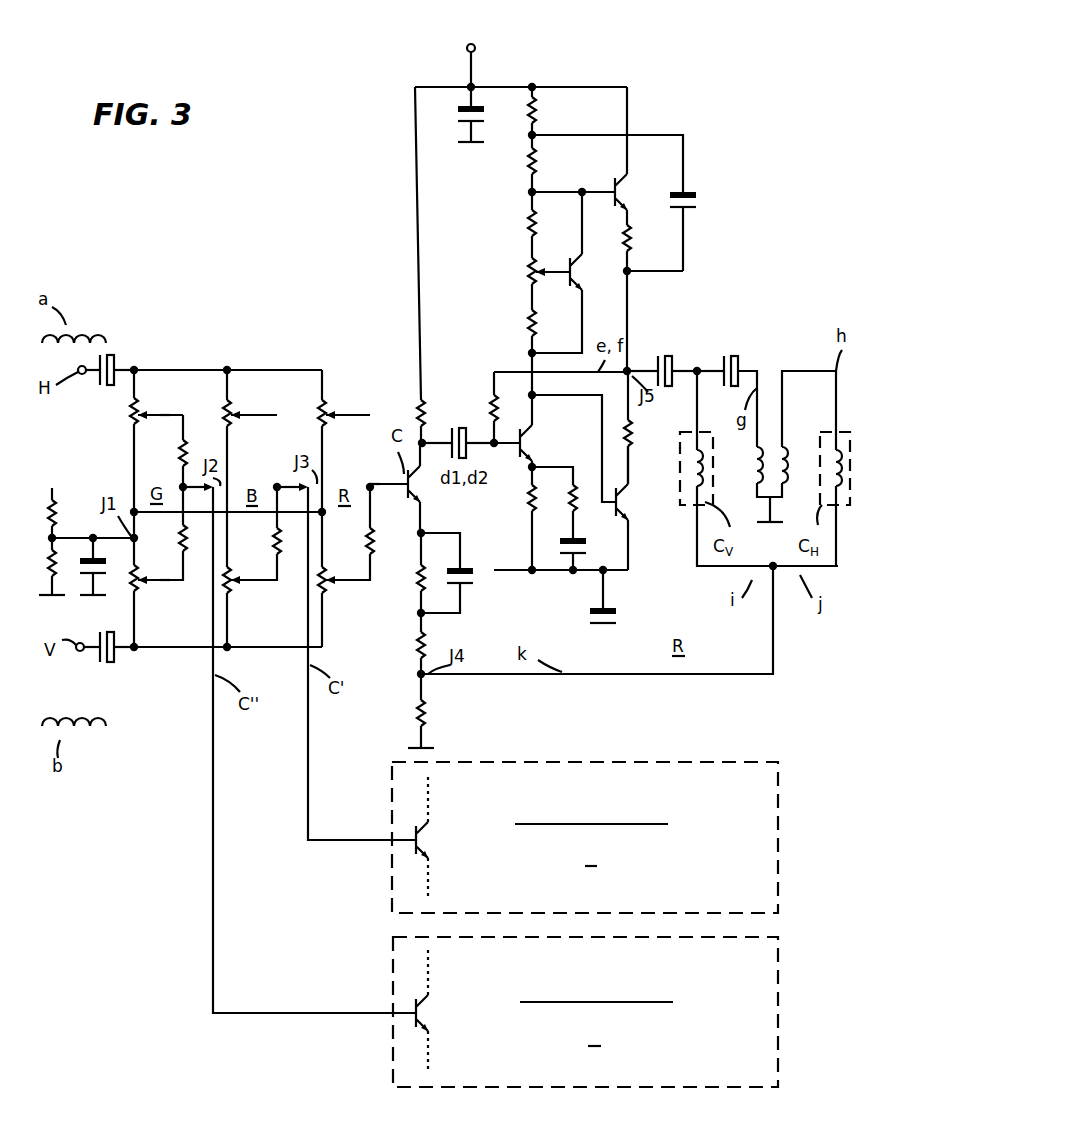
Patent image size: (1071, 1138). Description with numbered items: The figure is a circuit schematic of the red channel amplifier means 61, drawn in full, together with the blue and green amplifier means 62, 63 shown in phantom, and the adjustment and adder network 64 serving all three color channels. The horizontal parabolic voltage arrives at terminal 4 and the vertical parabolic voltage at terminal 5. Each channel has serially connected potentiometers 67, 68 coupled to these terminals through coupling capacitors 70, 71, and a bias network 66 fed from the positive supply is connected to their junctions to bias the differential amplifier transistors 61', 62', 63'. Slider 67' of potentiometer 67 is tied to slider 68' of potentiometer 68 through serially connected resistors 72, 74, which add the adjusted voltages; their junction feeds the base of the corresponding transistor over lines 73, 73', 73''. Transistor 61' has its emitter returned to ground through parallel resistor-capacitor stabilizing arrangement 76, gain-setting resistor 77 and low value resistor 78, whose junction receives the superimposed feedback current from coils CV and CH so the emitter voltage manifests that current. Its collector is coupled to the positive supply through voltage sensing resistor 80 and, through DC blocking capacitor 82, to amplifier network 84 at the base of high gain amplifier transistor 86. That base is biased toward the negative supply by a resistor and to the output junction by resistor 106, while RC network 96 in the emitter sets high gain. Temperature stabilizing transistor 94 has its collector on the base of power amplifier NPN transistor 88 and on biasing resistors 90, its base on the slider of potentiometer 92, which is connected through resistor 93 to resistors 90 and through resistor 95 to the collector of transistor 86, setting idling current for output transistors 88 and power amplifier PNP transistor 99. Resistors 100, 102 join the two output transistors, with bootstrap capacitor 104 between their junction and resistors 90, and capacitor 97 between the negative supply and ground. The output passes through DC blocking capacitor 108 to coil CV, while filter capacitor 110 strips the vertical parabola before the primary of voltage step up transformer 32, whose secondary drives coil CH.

The terminal 4 is at (84, 375).
The terminal 5 is at (82, 668).
The voltage step up transformer 32 is at (770, 448).
The amplifier means circuit 61 is at (521, 205).
The differential amplifier transistor 61' is at (419, 490).
The amplifier means circuit 62 is at (585, 818).
The differential amplifier transistor 62' is at (390, 836).
The amplifier means circuit 63 is at (609, 1012).
The differential amplifier transistor 63' is at (385, 1011).
The network 64 is at (228, 366).
The bias network 66 is at (80, 528).
The potentiometer 67 is at (228, 441).
The slider 67' is at (156, 443).
The potentiometer 68 is at (233, 565).
The slider 68' is at (169, 607).
The coupling capacitor 70 is at (114, 362).
The coupling capacitor 71 is at (116, 660).
The resistor 72 is at (188, 456).
The line 73 is at (387, 506).
The line 73' is at (362, 663).
The line 73'' is at (314, 750).
The resistor 74 is at (178, 538).
The parallel resistor-capacitor stabilizing arrangement 76 is at (462, 596).
The resistor 77 is at (418, 644).
The resistor 78 is at (432, 716).
The voltage sensing resistor 80 is at (418, 410).
The DC blocking capacitor 82 is at (454, 428).
The amplifier network 84 is at (496, 322).
The high gain amplifier transistor 86 is at (535, 437).
The power amplifier NPN transistor 88 is at (615, 185).
The biasing resistors 90 is at (528, 170).
The potentiometer 92 is at (530, 272).
The resistor 93 is at (540, 218).
The temperature stabilizing transistor 94 is at (578, 280).
The resistor 95 is at (545, 327).
The RC network 96 is at (560, 516).
The capacitor 97 is at (622, 622).
The power amplifier PNP transistor 99 is at (632, 505).
The resistor 100 is at (640, 238).
The resistor 102 is at (634, 436).
The bootstrap capacitor 104 is at (713, 190).
The resistor 106 is at (490, 396).
The DC blocking capacitor 108 is at (666, 352).
The filter capacitor 110 is at (735, 352).